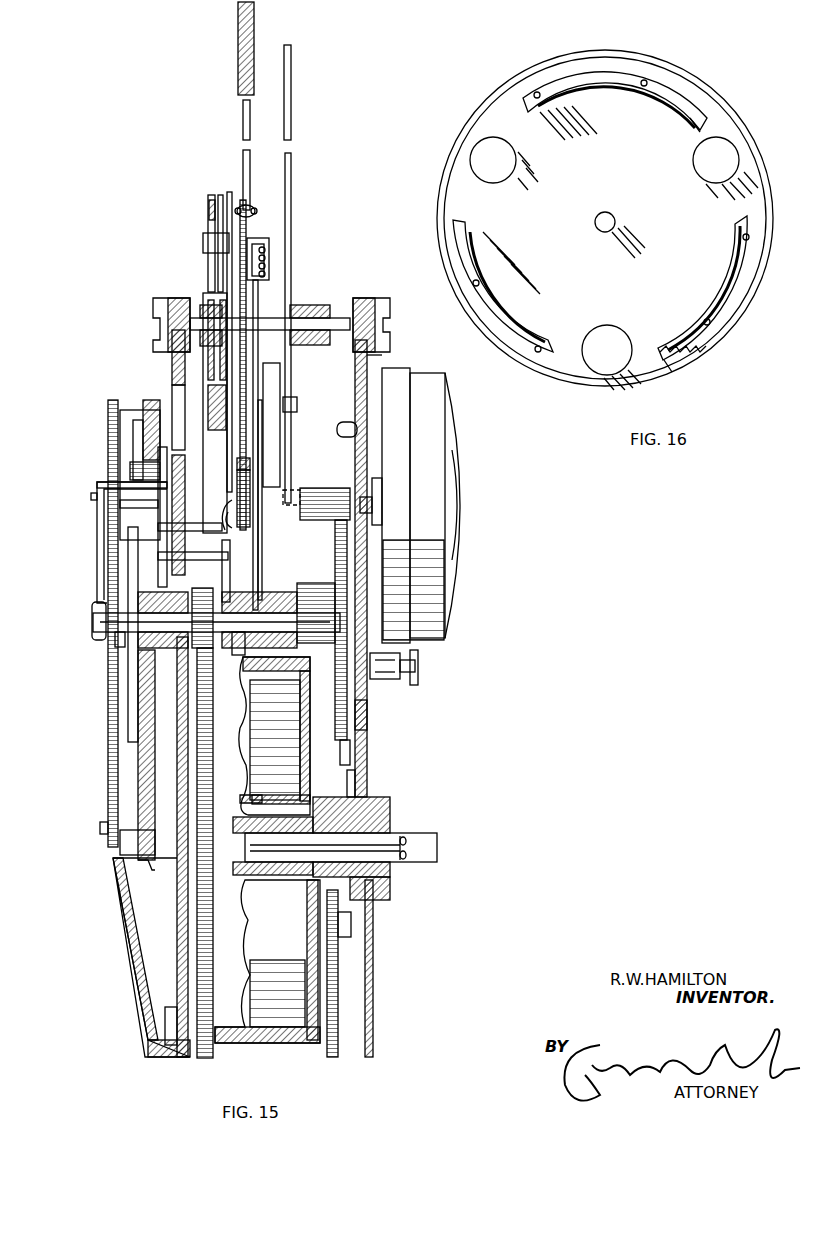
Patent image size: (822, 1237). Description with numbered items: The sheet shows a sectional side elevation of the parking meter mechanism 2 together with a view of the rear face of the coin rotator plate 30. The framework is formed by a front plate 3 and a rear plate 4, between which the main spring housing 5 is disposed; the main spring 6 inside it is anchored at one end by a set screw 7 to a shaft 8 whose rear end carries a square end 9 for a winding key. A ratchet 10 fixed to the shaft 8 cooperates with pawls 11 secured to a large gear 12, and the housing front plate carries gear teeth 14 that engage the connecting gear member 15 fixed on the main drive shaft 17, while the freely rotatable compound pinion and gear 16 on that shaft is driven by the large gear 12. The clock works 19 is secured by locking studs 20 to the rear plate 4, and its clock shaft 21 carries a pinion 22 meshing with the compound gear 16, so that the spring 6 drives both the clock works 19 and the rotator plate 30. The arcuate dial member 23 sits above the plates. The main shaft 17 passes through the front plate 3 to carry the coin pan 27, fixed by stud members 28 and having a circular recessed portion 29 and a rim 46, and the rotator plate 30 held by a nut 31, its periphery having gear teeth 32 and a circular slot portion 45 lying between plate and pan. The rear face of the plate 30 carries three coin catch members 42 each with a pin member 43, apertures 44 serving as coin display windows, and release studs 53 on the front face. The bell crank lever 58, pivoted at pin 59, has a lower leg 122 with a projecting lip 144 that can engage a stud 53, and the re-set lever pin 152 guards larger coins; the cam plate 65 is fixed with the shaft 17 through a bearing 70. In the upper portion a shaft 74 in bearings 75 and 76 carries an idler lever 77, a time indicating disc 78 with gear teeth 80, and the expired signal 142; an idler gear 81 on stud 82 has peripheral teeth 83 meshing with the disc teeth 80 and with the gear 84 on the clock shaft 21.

In FIG. 15, the parking meter mechanism 2 is at (112, 960).
In FIG. 15, the front plate 3 is at (178, 940).
In FIG. 15, the rear plate 4 is at (375, 982).
In FIG. 15, the main spring housing 5 is at (320, 1022).
In FIG. 15, the main spring 6 is at (290, 771).
In FIG. 15, the set screw 7 is at (242, 797).
In FIG. 15, the shaft 8 is at (390, 840).
In FIG. 15, the square end 9 is at (437, 845).
In FIG. 15, the ratchet 10 is at (360, 790).
In FIG. 15, the pawls 11 is at (350, 760).
In FIG. 15, the large gear 12 is at (350, 745).
In FIG. 15, the gear teeth 14 is at (214, 970).
In FIG. 15, the connecting gear member 15 is at (200, 590).
In FIG. 15, the pinion and gear 16 is at (314, 590).
In FIG. 15, the main drive shaft 17 is at (118, 642).
In FIG. 15, the clock works 19 is at (430, 493).
In FIG. 15, the locking studs 20 is at (418, 667).
In FIG. 15, the clock shaft 21 is at (291, 490).
In FIG. 15, the pinion 22 is at (325, 492).
In FIG. 15, the dial member 23 is at (237, 63).
In FIG. 15, the coin pan 27 is at (145, 755).
In FIG. 15, the stud members 28 is at (135, 465).
In FIG. 15, the circular recessed portion 29 is at (140, 427).
In FIG. 15, the coin rotator plate 30 is at (108, 815).
In FIG. 16, the coin rotator plate 30 is at (568, 367).
In FIG. 15, the nut 31 is at (95, 630).
In FIG. 16, the gear teeth 32 is at (700, 355).
In FIG. 16, the coin catch members 42 is at (583, 80).
In FIG. 16, the pin member 43 is at (707, 102).
In FIG. 16, the apertures 44 is at (497, 173).
In FIG. 15, the circular slot portion 45 is at (133, 705).
In FIG. 15, the rim 46 is at (152, 400).
In FIG. 15, the studs 53 is at (100, 830).
In FIG. 15, the bell crank lever 58 is at (97, 482).
In FIG. 15, the pin 59 is at (91, 497).
In FIG. 15, the cam plate 65 is at (232, 580).
In FIG. 15, the bearing 70 is at (236, 655).
In FIG. 15, the shaft 74 is at (268, 322).
In FIG. 15, the bearing 75 is at (172, 318).
In FIG. 15, the bearing 76 is at (358, 300).
In FIG. 15, the idler lever 77 is at (258, 458).
In FIG. 15, the time indicating disc 78 is at (246, 267).
In FIG. 15, the gear teeth 80 is at (247, 228).
In FIG. 15, the idler gear 81 is at (238, 470).
In FIG. 15, the stud 82 is at (220, 517).
In FIG. 15, the peripheral teeth 83 is at (252, 480).
In FIG. 15, the gear 84 is at (240, 535).
In FIG. 15, the lower leg 122 is at (97, 562).
In FIG. 15, the expired signal 142 is at (292, 157).
In FIG. 15, the projecting lip 144 is at (100, 620).
In FIG. 15, the re-set lever pin 152 is at (120, 505).